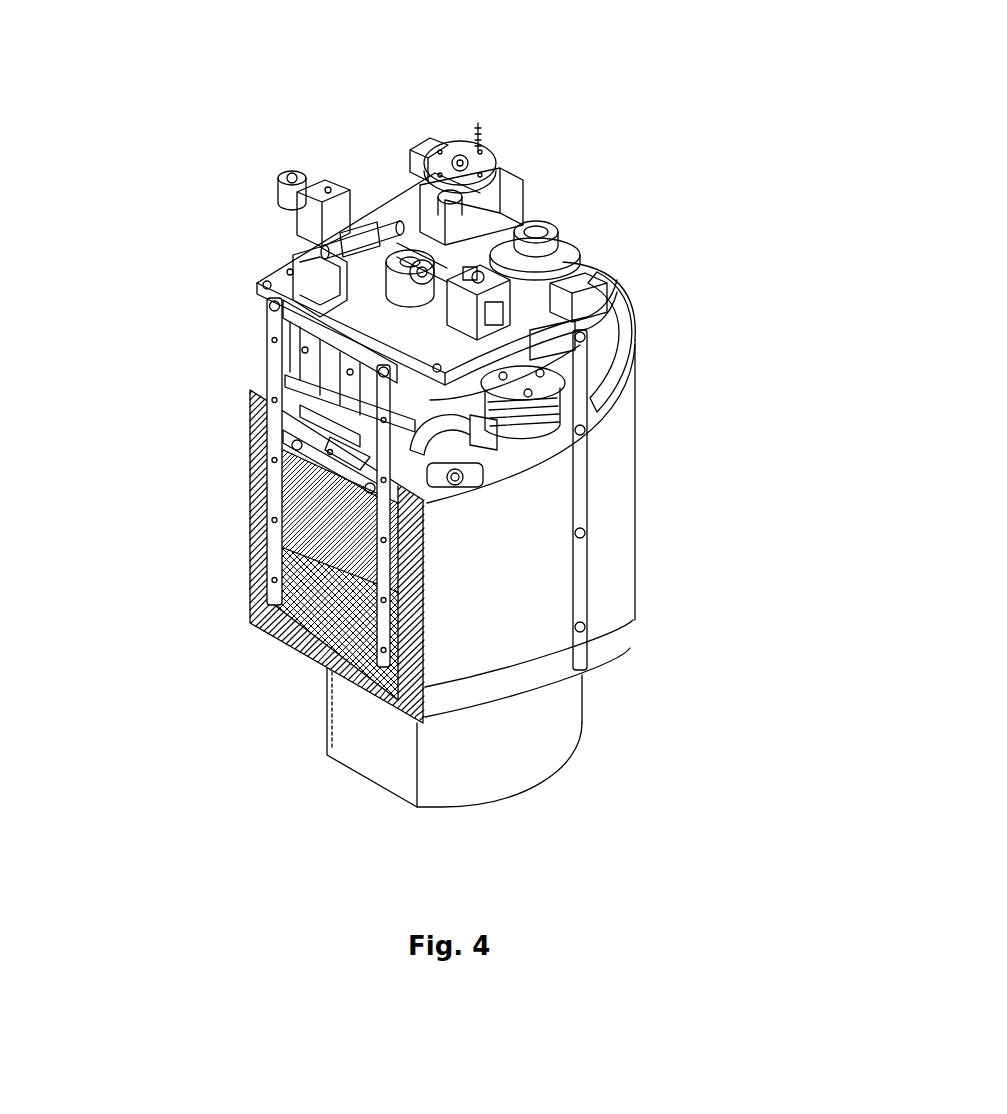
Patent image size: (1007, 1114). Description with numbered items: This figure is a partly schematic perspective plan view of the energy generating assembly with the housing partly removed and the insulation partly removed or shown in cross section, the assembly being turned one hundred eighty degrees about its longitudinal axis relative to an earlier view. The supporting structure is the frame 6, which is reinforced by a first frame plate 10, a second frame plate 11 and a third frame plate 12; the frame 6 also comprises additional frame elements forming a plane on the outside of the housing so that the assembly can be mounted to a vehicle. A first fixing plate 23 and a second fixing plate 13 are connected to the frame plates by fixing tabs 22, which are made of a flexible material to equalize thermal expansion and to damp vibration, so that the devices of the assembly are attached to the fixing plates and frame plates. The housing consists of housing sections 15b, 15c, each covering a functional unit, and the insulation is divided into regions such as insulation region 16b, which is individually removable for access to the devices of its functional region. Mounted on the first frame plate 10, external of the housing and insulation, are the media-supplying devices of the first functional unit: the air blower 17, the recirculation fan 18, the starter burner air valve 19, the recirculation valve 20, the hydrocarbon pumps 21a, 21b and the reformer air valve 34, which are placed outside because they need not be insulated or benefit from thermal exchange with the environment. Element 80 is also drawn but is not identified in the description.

The frame 6 is at (580, 498).
The first frame plate 10 is at (313, 310).
The second frame plate 11 is at (300, 420).
The third frame plate 12 is at (323, 623).
The second fixing plate 13 is at (350, 435).
The housing section 15b is at (520, 577).
The housing section 15c is at (437, 782).
The insulation region 16b is at (407, 602).
The air blower 17 is at (560, 238).
The recirculation fan 18 is at (446, 150).
The starter burner air valve 19 is at (413, 203).
The recirculation valve 20 is at (317, 197).
The hydrocarbon pump 21a is at (417, 292).
The hydrocarbon pump 21b is at (380, 205).
The fixing tabs 22 is at (468, 467).
The first fixing plate 23 is at (497, 293).
The reformer air valve 34 is at (497, 300).
The bracket 80 is at (448, 403).